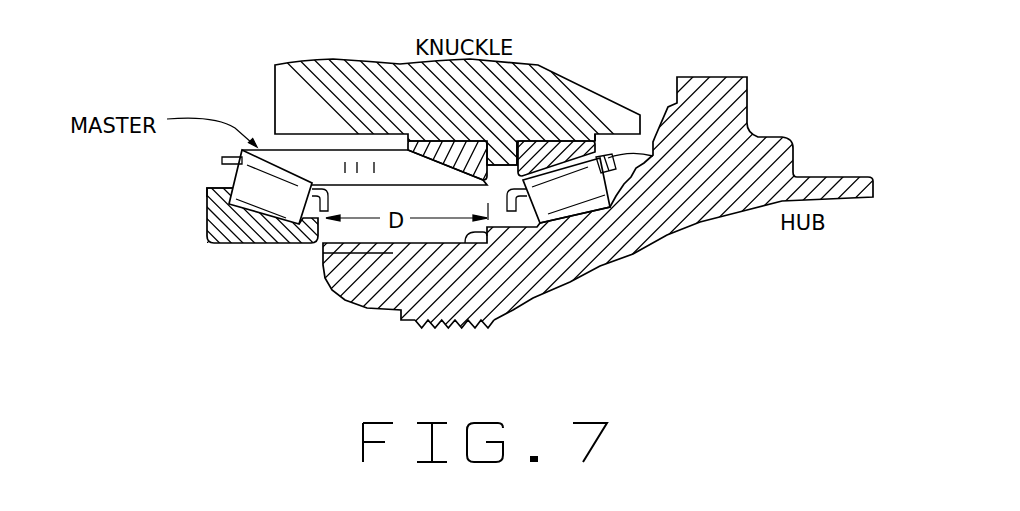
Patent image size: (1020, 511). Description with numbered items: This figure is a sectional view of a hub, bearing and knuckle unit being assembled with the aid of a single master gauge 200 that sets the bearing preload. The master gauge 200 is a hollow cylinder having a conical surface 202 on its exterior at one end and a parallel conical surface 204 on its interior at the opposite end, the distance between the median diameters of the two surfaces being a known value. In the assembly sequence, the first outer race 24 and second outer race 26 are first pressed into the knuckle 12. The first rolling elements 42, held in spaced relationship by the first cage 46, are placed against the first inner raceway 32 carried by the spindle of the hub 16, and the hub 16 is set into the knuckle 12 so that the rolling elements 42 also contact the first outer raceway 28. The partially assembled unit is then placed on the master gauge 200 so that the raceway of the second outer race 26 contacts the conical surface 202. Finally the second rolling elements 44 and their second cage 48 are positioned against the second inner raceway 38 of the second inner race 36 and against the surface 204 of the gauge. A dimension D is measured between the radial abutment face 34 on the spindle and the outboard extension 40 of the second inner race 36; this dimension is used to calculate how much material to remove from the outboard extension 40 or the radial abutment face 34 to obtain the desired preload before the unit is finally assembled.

The knuckle 12 is at (648, 110).
The hub 16 is at (752, 117).
The first outer race 24 is at (555, 138).
The second outer race 26 is at (440, 139).
The first outer raceway 28 is at (560, 205).
The first inner raceway 32 is at (590, 130).
The radial abutment face 34 is at (466, 238).
The second inner race 36 is at (242, 243).
The second inner raceway 38 is at (415, 168).
The outboard extension 40 is at (326, 278).
The first plurality of rolling elements 42 is at (590, 210).
The second plurality of rolling elements 44 is at (206, 197).
The first cage 46 is at (610, 158).
The second cage 48 is at (222, 160).
The master gauge 200 is at (308, 162).
The conical surface 202 is at (560, 173).
The conical surface 204 is at (286, 182).